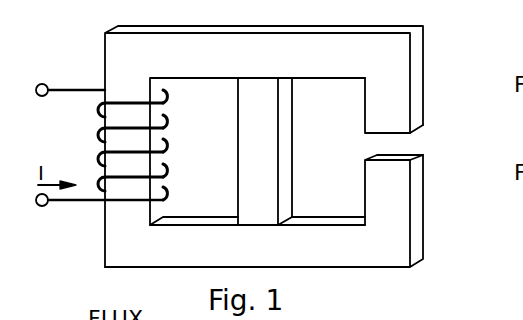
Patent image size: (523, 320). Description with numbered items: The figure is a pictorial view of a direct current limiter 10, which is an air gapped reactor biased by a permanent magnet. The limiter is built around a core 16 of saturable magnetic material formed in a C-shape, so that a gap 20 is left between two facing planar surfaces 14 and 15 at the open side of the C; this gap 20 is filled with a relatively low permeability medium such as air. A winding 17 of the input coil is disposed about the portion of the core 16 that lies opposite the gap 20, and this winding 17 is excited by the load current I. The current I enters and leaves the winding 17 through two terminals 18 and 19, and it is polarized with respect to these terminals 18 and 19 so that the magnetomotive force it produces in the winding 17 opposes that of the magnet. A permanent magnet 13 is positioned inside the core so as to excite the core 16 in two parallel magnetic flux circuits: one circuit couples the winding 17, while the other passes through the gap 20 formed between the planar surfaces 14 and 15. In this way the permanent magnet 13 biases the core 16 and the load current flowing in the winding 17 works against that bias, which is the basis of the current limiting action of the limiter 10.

The direct current limiter 10 is at (270, 25).
The permanent magnet 13 is at (287, 163).
The planar surface 14 is at (400, 132).
The planar surface 15 is at (393, 163).
The core 16 is at (351, 257).
The winding 17 is at (88, 89).
The terminal 18 is at (40, 105).
The terminal 19 is at (95, 213).
The gap 20 is at (441, 144).